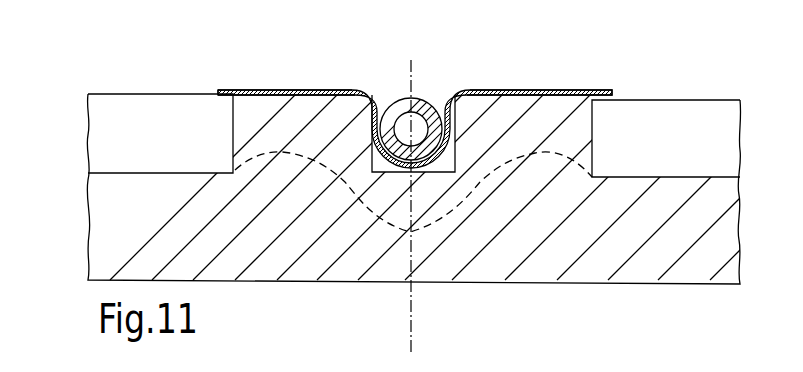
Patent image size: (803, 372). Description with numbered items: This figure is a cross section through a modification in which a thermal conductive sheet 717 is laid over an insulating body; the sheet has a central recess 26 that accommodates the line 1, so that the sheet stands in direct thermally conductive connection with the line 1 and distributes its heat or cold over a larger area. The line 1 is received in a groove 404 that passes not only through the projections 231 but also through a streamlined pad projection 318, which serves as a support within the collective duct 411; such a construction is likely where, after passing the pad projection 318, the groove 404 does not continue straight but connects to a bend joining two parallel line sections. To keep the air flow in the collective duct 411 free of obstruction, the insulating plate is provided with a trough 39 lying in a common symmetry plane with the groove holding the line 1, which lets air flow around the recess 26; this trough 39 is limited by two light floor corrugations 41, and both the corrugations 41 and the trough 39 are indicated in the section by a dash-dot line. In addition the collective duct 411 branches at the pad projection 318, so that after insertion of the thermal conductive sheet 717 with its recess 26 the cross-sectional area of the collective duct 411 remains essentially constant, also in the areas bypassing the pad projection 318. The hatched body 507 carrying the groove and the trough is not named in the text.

The line 1 is at (430, 97).
The recess 26 is at (379, 108).
The trough 39 is at (403, 234).
The floor corrugations 41 is at (276, 153).
The projections 231 is at (665, 128).
The pad projection 318 is at (590, 100).
The groove 404 is at (463, 137).
The collective duct 411 is at (125, 144).
The hatched body 507 is at (640, 273).
The thermal conductive sheet 717 is at (239, 89).